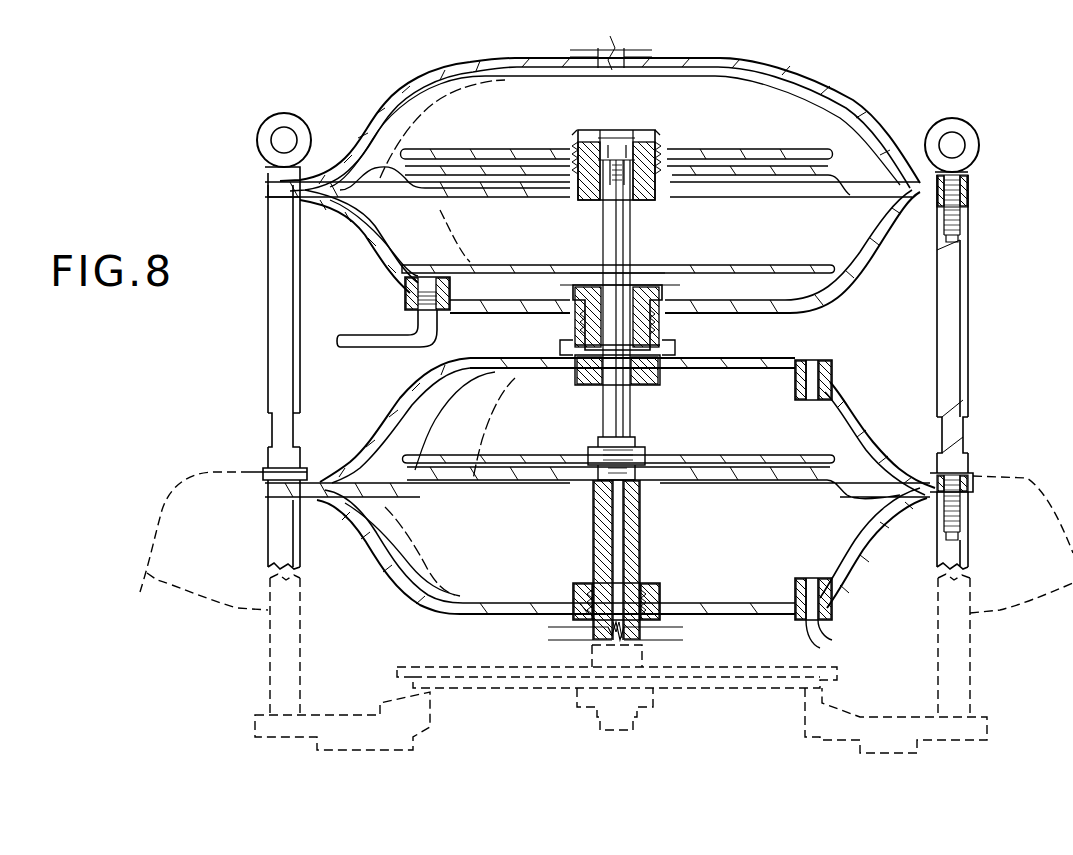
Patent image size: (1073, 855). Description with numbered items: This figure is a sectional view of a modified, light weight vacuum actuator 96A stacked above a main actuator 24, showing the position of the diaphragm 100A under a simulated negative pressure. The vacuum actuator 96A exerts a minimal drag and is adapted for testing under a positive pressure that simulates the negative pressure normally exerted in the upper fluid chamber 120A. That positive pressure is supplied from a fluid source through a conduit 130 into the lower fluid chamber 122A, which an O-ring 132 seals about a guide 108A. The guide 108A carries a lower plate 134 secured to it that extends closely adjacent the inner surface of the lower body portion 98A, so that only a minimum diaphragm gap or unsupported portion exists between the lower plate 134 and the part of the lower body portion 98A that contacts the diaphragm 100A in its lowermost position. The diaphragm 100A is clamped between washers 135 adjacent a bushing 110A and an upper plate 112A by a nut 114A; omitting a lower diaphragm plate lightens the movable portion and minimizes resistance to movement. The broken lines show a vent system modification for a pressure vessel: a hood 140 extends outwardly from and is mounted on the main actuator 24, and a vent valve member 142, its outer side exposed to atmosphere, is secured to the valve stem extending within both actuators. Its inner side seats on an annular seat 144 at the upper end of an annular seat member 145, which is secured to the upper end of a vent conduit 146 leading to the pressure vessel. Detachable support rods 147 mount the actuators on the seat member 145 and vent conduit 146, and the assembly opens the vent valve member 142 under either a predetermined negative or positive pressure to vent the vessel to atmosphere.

The vacuum actuator 96A is at (812, 66).
The lower body portion 98A is at (833, 288).
The diaphragm 100A is at (417, 186).
The guide 108A is at (683, 290).
The bushing 110A is at (648, 198).
The upper plate 112A is at (792, 160).
The nut 114A is at (595, 150).
The upper fluid chamber 120A is at (655, 109).
The lower fluid chamber 122A is at (547, 250).
The conduit 130 is at (384, 330).
The O-ring 132 is at (673, 310).
The lower plate 134 is at (780, 264).
The washers 135 is at (665, 150).
The main actuator 24 is at (355, 425).
The hood 140 is at (150, 478).
The vent valve member 142 is at (452, 665).
The annular seat 144 is at (807, 670).
The annular seat member 145 is at (808, 717).
The vent conduit 146 is at (455, 740).
The support rods 147 is at (970, 680).